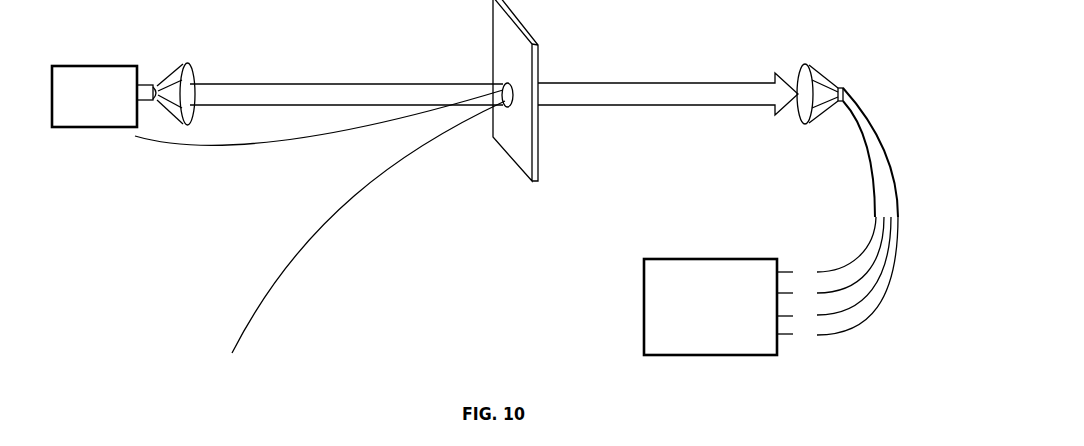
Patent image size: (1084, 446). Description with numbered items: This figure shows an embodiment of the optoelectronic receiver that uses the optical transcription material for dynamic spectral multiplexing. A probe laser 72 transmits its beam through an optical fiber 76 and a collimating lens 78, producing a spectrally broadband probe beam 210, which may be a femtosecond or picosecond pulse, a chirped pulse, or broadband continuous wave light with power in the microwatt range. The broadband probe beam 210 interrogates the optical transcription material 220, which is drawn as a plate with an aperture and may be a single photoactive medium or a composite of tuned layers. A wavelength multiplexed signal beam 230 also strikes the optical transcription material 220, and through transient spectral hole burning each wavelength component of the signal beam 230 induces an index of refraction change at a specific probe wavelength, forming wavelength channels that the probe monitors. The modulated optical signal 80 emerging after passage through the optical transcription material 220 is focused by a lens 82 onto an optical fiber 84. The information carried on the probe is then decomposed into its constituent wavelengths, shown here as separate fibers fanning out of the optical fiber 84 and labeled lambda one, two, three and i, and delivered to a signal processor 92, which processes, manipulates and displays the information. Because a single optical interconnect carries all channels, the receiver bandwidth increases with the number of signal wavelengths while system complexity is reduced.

The probe laser 72 is at (92, 65).
The optical fiber 76 is at (143, 86).
The collimating lens 78 is at (188, 65).
The broadband probe beam 210 is at (383, 83).
The optical transcription material (OTM) 220 is at (522, 155).
The wavelength multiplexed signal beam 230 is at (320, 221).
The modulated optical signal 80 is at (612, 82).
The lens 82 is at (828, 75).
The optical fiber 84 is at (883, 120).
The signal processor 92 is at (702, 257).